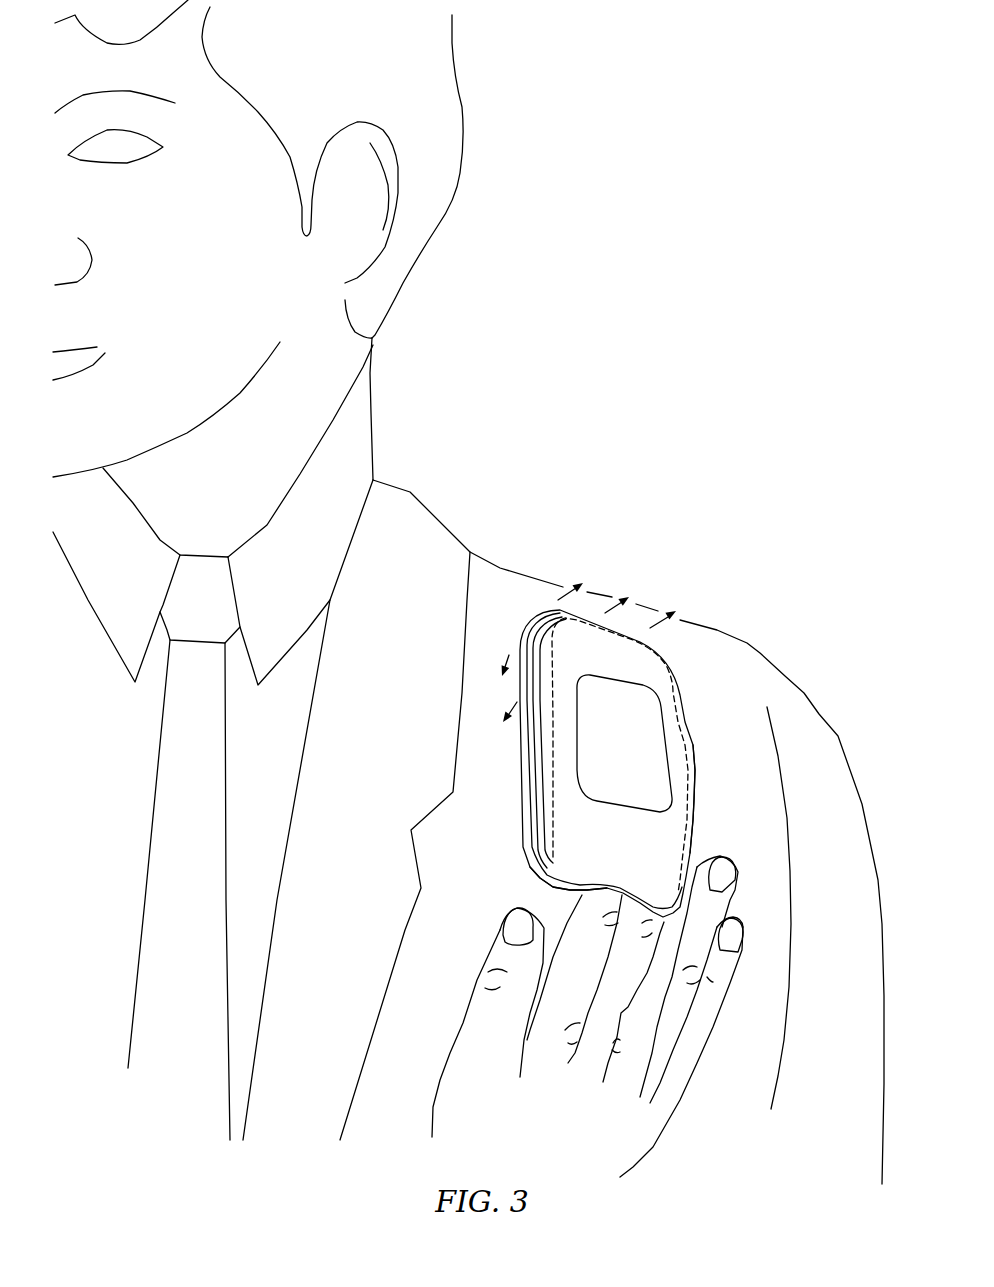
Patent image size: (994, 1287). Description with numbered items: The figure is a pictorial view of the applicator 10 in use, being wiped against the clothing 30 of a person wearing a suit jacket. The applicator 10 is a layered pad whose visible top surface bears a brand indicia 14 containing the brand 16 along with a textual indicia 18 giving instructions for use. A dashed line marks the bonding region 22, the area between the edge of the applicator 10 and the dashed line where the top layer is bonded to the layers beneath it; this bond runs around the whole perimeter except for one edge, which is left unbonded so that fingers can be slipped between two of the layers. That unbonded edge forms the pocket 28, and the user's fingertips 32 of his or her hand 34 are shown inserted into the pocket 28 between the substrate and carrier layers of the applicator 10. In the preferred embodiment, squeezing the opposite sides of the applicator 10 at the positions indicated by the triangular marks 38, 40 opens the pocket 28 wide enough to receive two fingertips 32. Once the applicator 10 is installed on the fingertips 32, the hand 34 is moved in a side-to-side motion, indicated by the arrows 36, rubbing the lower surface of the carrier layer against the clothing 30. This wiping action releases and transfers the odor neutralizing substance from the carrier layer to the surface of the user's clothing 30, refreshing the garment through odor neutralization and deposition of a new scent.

The applicator 10 is at (623, 763).
The brand indicia 14 is at (673, 768).
The brand 16 is at (653, 742).
The textual indicia 18 is at (653, 823).
The bonding region 22 is at (548, 663).
The pocket 28 is at (580, 893).
The clothing 30 is at (717, 630).
The fingertips 32 is at (578, 1010).
The hand 34 is at (640, 1147).
The arrows 36 is at (580, 583).
The triangular mark 38 is at (540, 798).
The triangular mark 40 is at (708, 790).